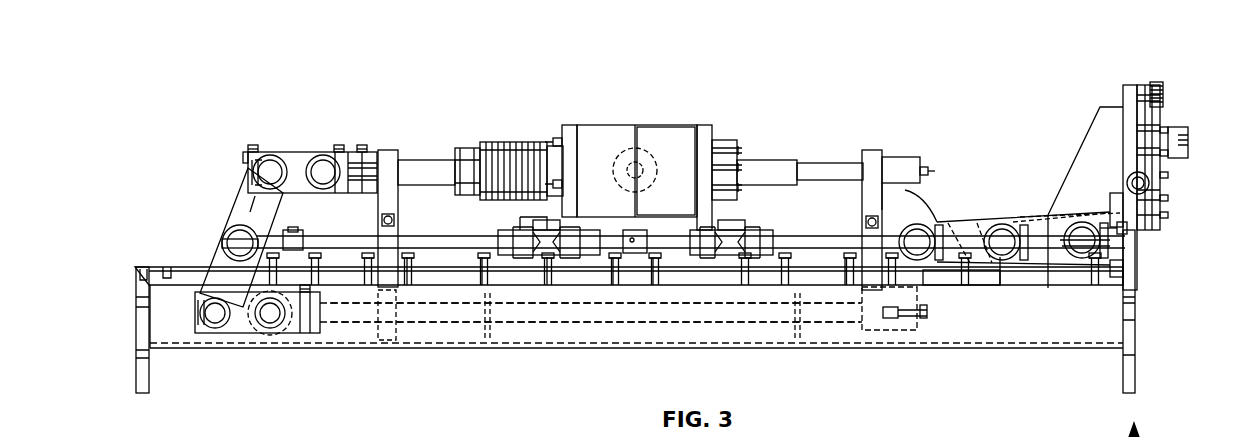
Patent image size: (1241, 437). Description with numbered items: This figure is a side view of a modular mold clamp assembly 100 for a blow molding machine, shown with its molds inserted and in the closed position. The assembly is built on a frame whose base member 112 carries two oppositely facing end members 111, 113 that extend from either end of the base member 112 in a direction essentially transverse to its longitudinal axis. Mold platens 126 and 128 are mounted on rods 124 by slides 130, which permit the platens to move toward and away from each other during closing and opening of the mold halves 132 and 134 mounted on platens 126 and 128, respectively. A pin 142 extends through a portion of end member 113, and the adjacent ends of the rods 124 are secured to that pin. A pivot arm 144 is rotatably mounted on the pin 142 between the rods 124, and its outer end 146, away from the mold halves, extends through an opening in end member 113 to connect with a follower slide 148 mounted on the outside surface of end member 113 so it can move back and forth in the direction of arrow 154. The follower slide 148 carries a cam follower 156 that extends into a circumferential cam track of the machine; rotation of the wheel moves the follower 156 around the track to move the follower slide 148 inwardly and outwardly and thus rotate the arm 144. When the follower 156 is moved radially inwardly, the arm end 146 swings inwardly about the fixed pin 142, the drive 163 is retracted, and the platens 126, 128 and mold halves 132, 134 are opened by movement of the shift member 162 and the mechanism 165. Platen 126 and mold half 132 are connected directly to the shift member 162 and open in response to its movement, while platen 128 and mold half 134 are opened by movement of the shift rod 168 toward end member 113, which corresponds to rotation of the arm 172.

The modular mold clamp assembly 100 is at (188, 86).
The end member 111 is at (135, 347).
The base member 112 is at (955, 325).
The end member 113 is at (1136, 343).
The rods 124 is at (838, 243).
The mold platen 126 is at (706, 124).
The mold platen 128 is at (568, 124).
The slides 130 is at (731, 227).
The mold half 132 is at (658, 124).
The mold half 134 is at (614, 130).
The pin 142 is at (1133, 242).
The pivot arm 144 is at (1060, 262).
The outer end 146 is at (1147, 228).
The follower slide 148 is at (1163, 168).
The arrow 154 is at (1143, 42).
The cam follower 156 is at (1187, 140).
The shift member 162 is at (912, 190).
The drive 163 is at (1037, 272).
The mechanism 165 is at (253, 138).
The shift rod 168 is at (570, 315).
The arm 172 is at (243, 196).